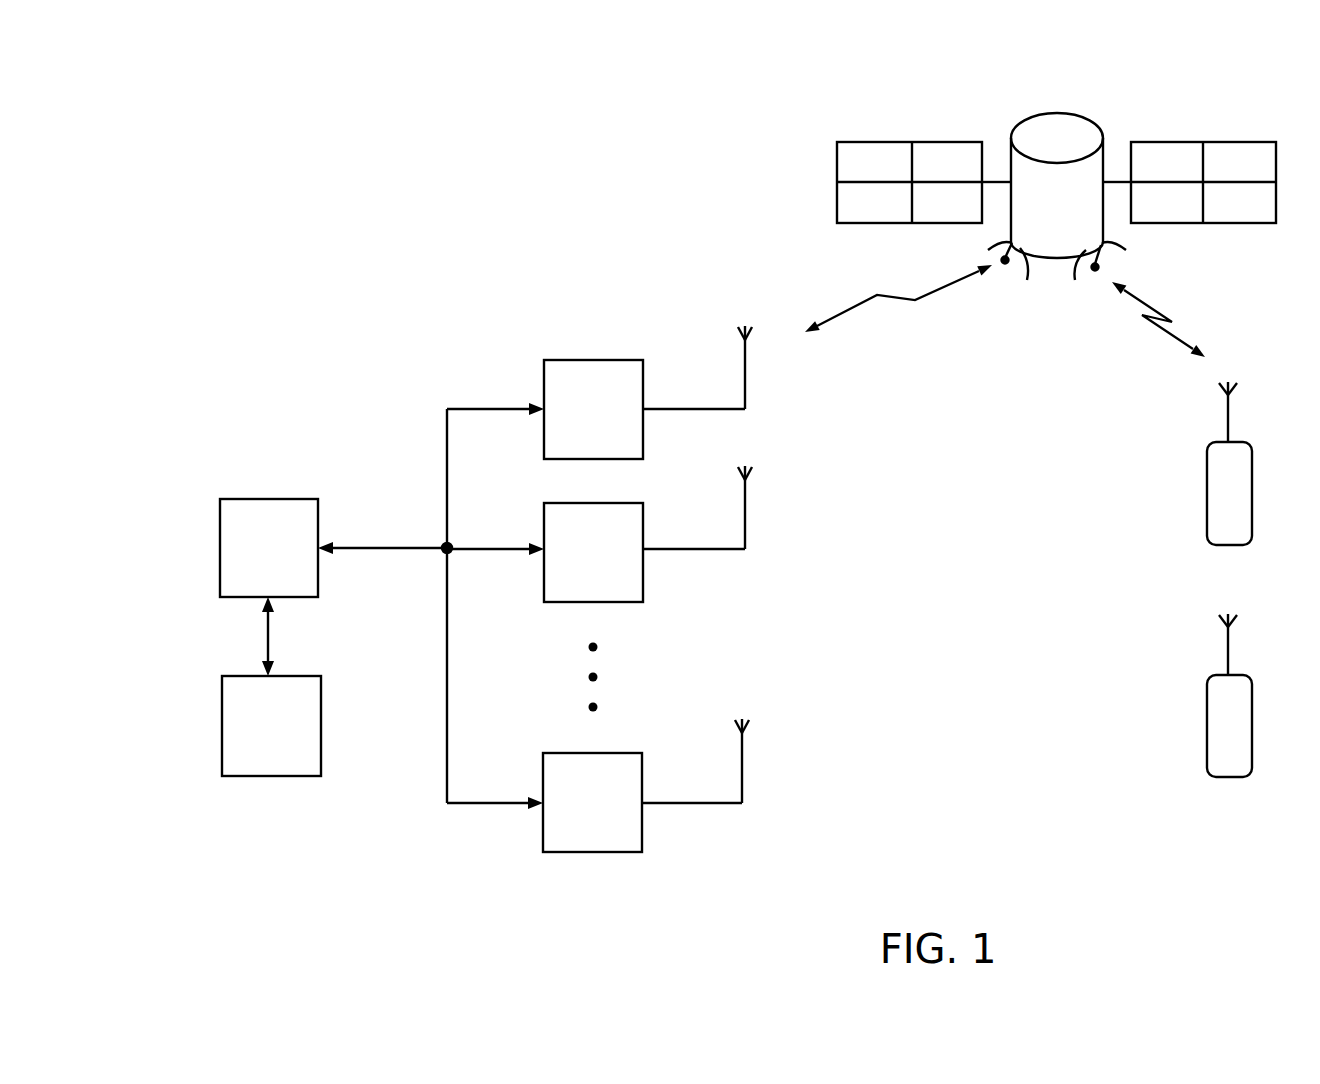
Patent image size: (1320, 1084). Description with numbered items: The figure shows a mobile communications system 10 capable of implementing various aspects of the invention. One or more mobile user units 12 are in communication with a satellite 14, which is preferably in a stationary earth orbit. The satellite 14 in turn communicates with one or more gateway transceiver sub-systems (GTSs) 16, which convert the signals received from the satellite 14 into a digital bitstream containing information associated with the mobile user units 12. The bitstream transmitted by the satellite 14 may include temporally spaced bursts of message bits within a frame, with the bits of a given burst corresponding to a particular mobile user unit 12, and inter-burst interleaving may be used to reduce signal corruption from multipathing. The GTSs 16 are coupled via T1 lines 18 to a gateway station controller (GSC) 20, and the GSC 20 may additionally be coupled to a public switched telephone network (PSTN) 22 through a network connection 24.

The mobile communications system 10 is at (476, 230).
The mobile user unit 12 is at (1207, 518).
The satellite 14 is at (1027, 137).
The gateway transceiver sub-system 16 is at (643, 447).
The T1 line 18 is at (397, 548).
The gateway station controller 20 is at (220, 537).
The public switched telephone network 22 is at (222, 722).
The network connection 24 is at (268, 635).